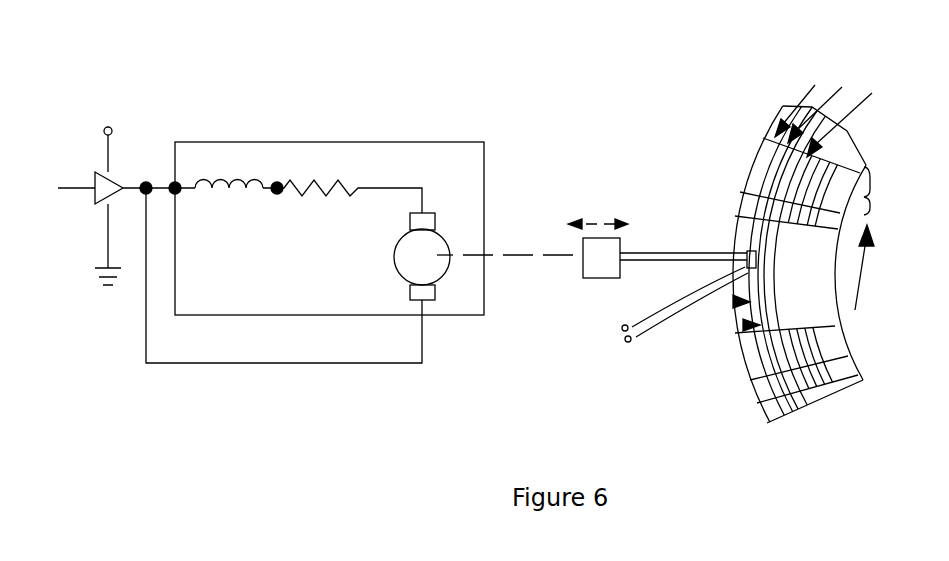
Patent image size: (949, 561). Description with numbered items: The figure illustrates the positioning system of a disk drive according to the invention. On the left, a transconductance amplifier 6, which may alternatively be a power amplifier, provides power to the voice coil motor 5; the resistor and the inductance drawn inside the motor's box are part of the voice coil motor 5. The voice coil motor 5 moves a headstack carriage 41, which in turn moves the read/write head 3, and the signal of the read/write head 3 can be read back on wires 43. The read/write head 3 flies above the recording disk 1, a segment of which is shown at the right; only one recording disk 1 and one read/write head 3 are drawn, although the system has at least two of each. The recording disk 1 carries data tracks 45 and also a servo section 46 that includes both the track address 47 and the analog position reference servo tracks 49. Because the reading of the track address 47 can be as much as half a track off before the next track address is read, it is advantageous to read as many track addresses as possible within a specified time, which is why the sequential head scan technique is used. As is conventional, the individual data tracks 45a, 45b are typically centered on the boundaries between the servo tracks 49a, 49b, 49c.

The recording disk 1 is at (782, 104).
The read/write head 3 is at (741, 243).
The voice coil motor 5 is at (455, 141).
The transconductance amplifier 6 is at (96, 185).
The headstack carriage 41 is at (598, 263).
The wires 43 is at (663, 331).
The data tracks 45 is at (812, 316).
The data track 45a is at (733, 302).
The data track 45b is at (745, 323).
The servo section 46 is at (882, 192).
The track address 47 is at (825, 222).
The analog position reference servo tracks 49 is at (838, 186).
The servo track 49a is at (801, 93).
The servo track 49b is at (820, 96).
The servo track 49c is at (841, 104).